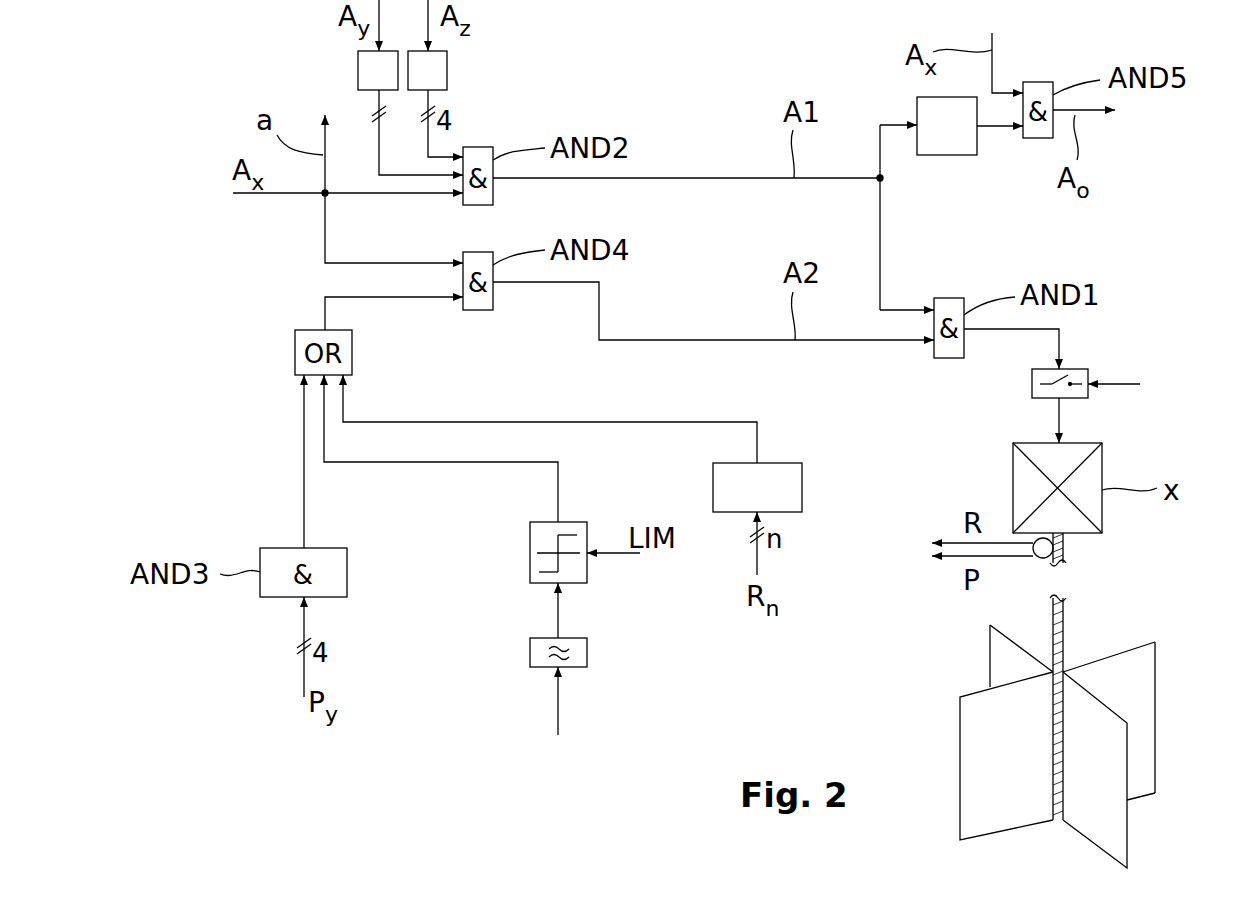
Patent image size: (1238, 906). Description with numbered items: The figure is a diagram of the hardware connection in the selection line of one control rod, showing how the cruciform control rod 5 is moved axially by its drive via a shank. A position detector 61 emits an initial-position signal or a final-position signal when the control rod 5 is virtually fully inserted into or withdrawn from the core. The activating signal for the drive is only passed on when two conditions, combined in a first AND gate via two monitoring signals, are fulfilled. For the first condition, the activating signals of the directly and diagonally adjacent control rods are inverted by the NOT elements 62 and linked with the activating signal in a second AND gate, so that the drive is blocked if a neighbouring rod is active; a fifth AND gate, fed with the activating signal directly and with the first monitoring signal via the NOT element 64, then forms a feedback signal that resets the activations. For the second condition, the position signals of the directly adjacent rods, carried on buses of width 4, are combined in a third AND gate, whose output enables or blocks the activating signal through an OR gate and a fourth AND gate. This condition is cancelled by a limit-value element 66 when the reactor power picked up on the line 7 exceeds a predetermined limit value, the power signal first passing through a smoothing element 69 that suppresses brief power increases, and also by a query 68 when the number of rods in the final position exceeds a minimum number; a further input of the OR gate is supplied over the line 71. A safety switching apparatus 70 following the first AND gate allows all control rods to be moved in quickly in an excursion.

The bus width indicator 4 is at (368, 121).
The cruciform control rod 5 is at (1155, 715).
The line 7 is at (558, 708).
The position detector 61 is at (1043, 558).
The NOT elements 62 is at (447, 72).
The NOT element 64 is at (945, 155).
The limit-value element 66 is at (530, 553).
The query 68 is at (802, 487).
The smoothing element 69 is at (587, 650).
The safety switching apparatus 70 is at (1032, 385).
The signal line 71 is at (757, 445).